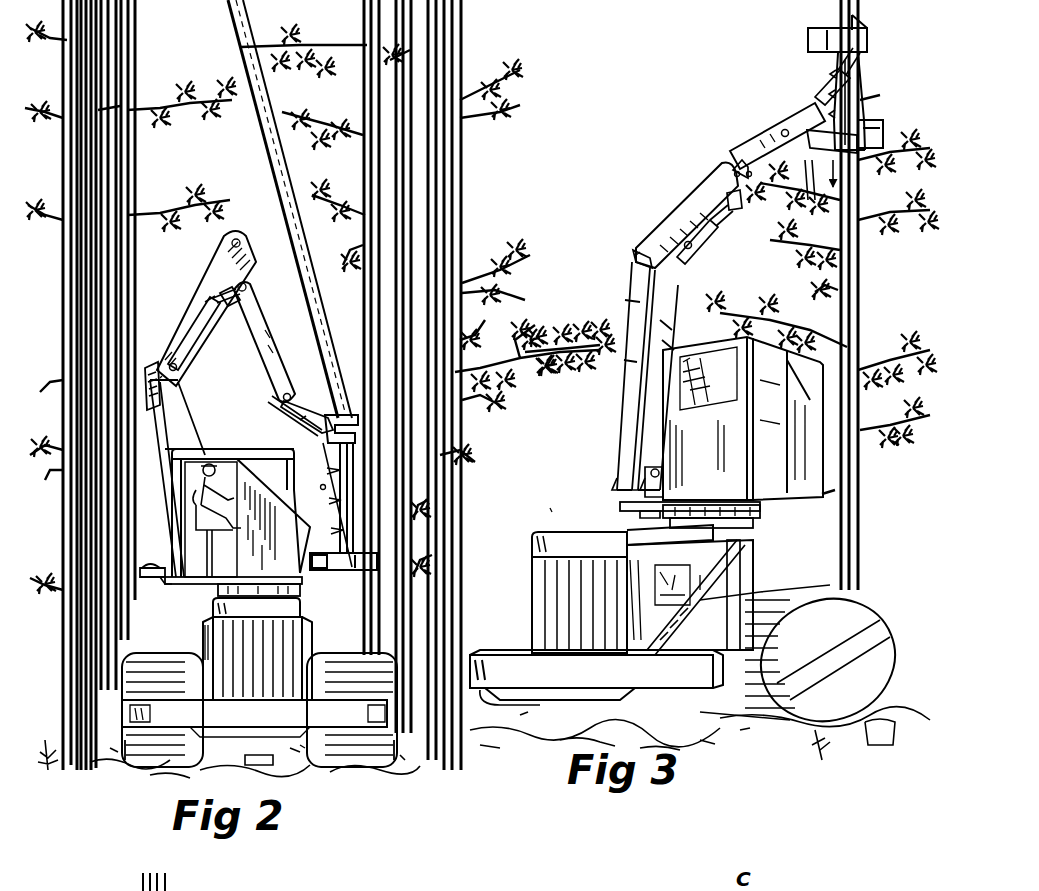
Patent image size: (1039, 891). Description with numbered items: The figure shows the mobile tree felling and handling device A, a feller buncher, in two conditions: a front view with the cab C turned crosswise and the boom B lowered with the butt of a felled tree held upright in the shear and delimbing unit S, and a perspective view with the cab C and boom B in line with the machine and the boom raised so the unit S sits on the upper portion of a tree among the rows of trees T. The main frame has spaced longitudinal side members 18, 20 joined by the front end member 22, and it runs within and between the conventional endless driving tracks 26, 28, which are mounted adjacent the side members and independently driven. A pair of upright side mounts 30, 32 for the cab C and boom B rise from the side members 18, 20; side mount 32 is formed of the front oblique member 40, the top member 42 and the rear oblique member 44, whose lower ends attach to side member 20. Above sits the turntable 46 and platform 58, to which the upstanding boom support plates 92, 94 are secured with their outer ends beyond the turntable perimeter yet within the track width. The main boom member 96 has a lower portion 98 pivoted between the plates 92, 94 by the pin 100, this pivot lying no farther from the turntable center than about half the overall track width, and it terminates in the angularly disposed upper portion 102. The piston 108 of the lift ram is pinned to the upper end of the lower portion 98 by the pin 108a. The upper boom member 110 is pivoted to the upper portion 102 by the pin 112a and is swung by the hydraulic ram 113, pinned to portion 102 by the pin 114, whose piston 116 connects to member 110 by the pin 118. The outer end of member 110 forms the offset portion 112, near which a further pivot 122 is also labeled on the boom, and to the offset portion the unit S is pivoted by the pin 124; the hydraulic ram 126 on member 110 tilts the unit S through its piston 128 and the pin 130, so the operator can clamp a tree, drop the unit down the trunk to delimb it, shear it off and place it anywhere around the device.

In FIG. 2, the side member 18 is at (198, 688).
In FIG. 3, the side member 18 is at (532, 645).
In FIG. 2, the side member 20 is at (327, 673).
In FIG. 3, the side member 20 is at (668, 648).
In FIG. 2, the front end member 22 is at (232, 740).
In FIG. 3, the front end member 22 is at (595, 690).
In FIG. 2, the endless driving track 26 is at (148, 762).
In FIG. 3, the endless driving track 26 is at (520, 720).
In FIG. 2, the endless driving track 28 is at (372, 765).
In FIG. 3, the endless driving track 28 is at (742, 735).
In FIG. 2, the side mount 30 is at (198, 617).
In FIG. 3, the side mount 30 is at (622, 589).
In FIG. 2, the side mount 32 is at (312, 636).
In FIG. 3, the side mount 32 is at (784, 553).
In FIG. 3, the front oblique member 40 is at (693, 621).
In FIG. 3, the top member 42 is at (754, 532).
In FIG. 3, the rear oblique member 44 is at (778, 565).
In FIG. 2, the turntable 46 is at (310, 591).
In FIG. 3, the turntable 46 is at (768, 508).
In FIG. 2, the platform 58 is at (205, 588).
In FIG. 3, the platform 58 is at (622, 503).
In FIG. 3, the boom support plate 92 is at (622, 487).
In FIG. 2, the boom support plate 94 is at (160, 568).
In FIG. 3, the boom support plate 94 is at (660, 507).
In FIG. 3, the main boom member 96 is at (620, 409).
In FIG. 2, the lower portion 98 is at (142, 410).
In FIG. 3, the lower portion 98 is at (636, 313).
In FIG. 2, the pin 100 is at (166, 586).
In FIG. 3, the pin 100 is at (614, 474).
In FIG. 2, the upper portion 102 is at (224, 262).
In FIG. 3, the upper portion 102 is at (654, 228).
In FIG. 2, the piston 108 is at (208, 420).
In FIG. 3, the piston 108 is at (679, 294).
In FIG. 3, the pin 108a is at (611, 272).
In FIG. 2, the upper boom member 110 is at (285, 330).
In FIG. 3, the upper boom member 110 is at (722, 160).
In FIG. 2, the offset portion 112 is at (278, 432).
In FIG. 3, the offset portion 112 is at (812, 147).
In FIG. 3, the pin 112a is at (718, 180).
In FIG. 2, the hydraulic ram 113 is at (230, 328).
In FIG. 3, the hydraulic ram 113 is at (714, 218).
In FIG. 2, the pin 114 is at (178, 367).
In FIG. 3, the pin 114 is at (692, 248).
In FIG. 3, the piston 116 is at (755, 208).
In FIG. 2, the pin 118 is at (222, 302).
In FIG. 3, the pin 118 is at (745, 168).
In FIG. 2, the pivot pin 122 is at (284, 396).
In FIG. 3, the pivot pin 122 is at (782, 130).
In FIG. 2, the pin 124 is at (311, 530).
In FIG. 3, the pin 124 is at (843, 104).
In FIG. 2, the hydraulic ram 126 is at (290, 417).
In FIG. 3, the hydraulic ram 126 is at (816, 103).
In FIG. 3, the piston 128 is at (832, 82).
In FIG. 2, the pin 130 is at (335, 483).
In FIG. 3, the pin 130 is at (852, 69).
In FIG. 2, the trees T is at (240, 46).
In FIG. 3, the trees T is at (860, 483).
In FIG. 2, the shear and delimbing unit S is at (325, 447).
In FIG. 3, the shear and delimbing unit S is at (805, 38).
In FIG. 2, the mobile tree felling and handling device A is at (300, 750).
In FIG. 3, the mobile tree felling and handling device A is at (548, 510).
In FIG. 2, the boom B is at (188, 298).
In FIG. 3, the boom B is at (622, 257).
In FIG. 2, the cab C is at (213, 445).
In FIG. 3, the cab C is at (743, 418).